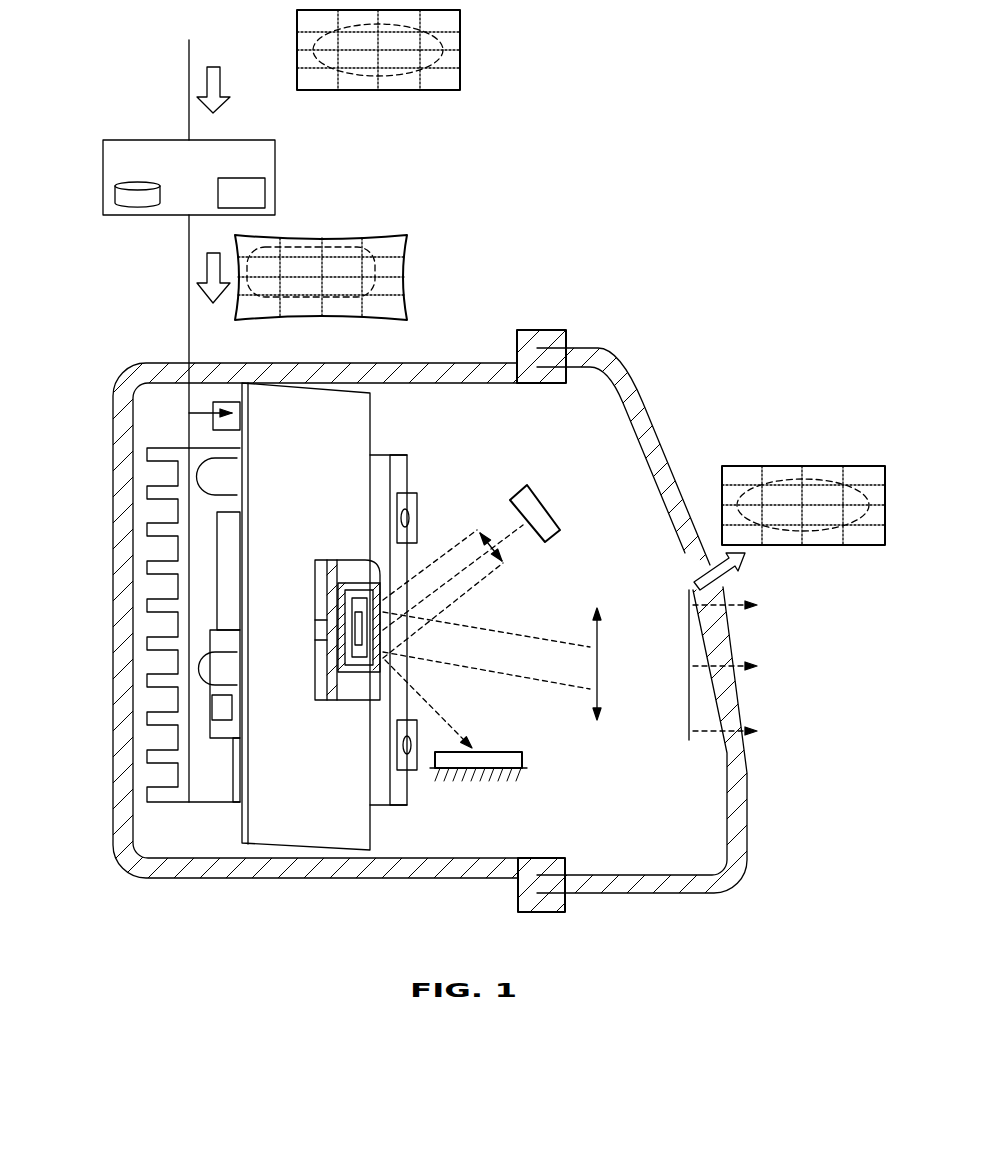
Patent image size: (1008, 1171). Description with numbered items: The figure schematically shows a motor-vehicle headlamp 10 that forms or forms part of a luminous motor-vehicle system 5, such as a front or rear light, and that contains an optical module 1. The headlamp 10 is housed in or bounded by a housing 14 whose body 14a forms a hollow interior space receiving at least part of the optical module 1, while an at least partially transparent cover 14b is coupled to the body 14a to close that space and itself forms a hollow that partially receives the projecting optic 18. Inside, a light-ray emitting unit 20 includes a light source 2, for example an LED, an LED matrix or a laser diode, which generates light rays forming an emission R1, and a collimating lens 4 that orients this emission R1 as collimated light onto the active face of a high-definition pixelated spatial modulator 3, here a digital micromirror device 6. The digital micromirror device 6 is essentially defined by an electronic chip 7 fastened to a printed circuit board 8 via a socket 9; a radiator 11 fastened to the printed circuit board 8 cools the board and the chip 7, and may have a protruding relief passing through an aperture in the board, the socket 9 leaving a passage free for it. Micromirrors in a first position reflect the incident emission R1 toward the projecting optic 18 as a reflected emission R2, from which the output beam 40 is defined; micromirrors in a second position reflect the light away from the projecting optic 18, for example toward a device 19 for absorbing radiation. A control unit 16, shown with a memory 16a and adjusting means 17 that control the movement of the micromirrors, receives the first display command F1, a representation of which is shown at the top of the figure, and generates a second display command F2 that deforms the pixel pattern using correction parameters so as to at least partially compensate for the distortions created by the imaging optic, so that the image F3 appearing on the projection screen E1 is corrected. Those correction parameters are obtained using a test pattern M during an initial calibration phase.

The optical module 1 is at (617, 478).
The light source 2 is at (530, 528).
The high-definition pixelated spatial modulator 3 is at (333, 805).
The collimating lens 4 is at (489, 540).
The luminous motor-vehicle system 5 is at (660, 200).
The digital micromirror device 6 is at (358, 690).
The electronic chip 7 is at (330, 690).
The printed circuit board 8 is at (285, 518).
The socket 9 is at (320, 580).
The motor-vehicle headlamp 10 is at (97, 338).
The radiator 11 is at (153, 453).
The housing 14 is at (550, 330).
The body 14a is at (488, 340).
The cover 14b is at (628, 343).
The control unit 16 is at (172, 152).
The memory 16a is at (135, 193).
The adjusting means 17 is at (247, 193).
The projecting optic 18 is at (598, 732).
The device for absorbing radiation 19 is at (503, 780).
The light-ray emitting unit 20 is at (530, 468).
The output beam 40 is at (752, 613).
The first display command F1 is at (455, 38).
The second display command F2 is at (402, 265).
The image F3 is at (752, 477).
The test pattern M is at (403, 75).
The emission R1 is at (462, 538).
The reflected emission R2 is at (543, 680).
The projection screen E1 is at (689, 740).